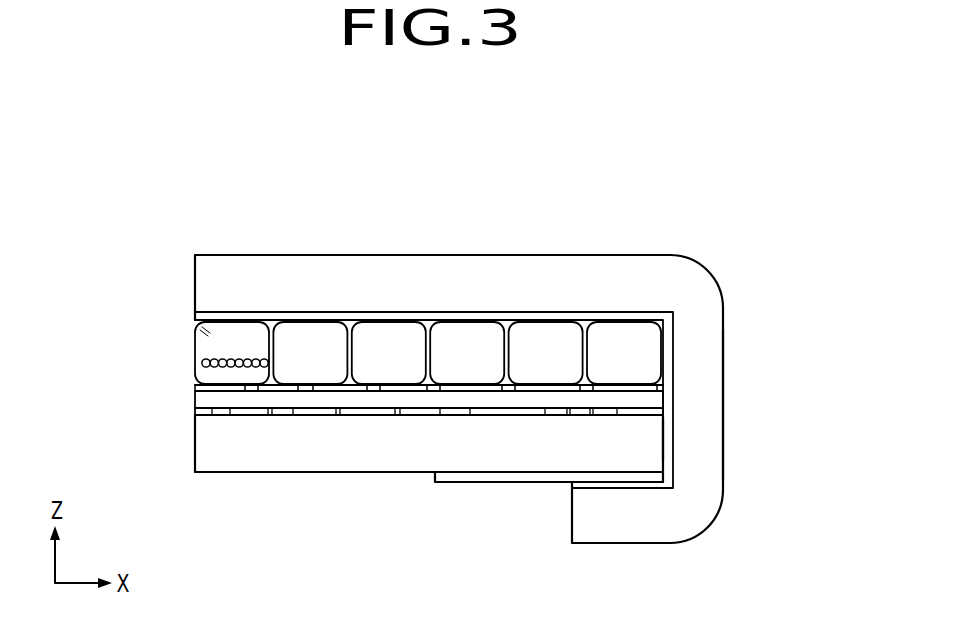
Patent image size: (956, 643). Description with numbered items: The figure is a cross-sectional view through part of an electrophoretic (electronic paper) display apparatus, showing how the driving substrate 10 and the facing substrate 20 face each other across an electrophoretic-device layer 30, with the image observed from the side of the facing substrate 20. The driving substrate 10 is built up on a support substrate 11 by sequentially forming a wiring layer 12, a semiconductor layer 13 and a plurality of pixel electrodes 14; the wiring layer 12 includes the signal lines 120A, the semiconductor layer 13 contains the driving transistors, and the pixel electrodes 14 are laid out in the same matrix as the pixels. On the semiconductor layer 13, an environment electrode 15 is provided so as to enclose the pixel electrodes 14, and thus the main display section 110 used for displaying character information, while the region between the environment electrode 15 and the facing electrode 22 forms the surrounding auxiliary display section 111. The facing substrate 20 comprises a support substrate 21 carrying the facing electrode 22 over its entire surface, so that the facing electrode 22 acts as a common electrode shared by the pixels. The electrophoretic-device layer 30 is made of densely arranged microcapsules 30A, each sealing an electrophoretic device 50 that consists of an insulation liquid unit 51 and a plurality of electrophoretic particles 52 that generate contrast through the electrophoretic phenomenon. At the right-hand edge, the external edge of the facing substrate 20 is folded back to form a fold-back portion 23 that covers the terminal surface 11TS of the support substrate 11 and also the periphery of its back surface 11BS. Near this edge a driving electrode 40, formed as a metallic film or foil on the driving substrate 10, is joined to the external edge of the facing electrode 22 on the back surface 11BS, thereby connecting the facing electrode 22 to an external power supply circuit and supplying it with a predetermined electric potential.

The driving substrate 10 is at (330, 544).
The support substrate 11 is at (362, 462).
The back surface 11BS is at (418, 474).
The terminal surface 11TS is at (663, 438).
The wiring layer 12 is at (189, 413).
The signal lines 120A is at (227, 416).
The semiconductor layer 13 is at (318, 399).
The pixel electrodes 14 is at (276, 389).
The environment electrode 15 is at (622, 386).
The facing substrate 20 is at (488, 247).
The support substrate 21 is at (333, 263).
The facing electrode 22 is at (376, 318).
The fold-back portion 23 is at (735, 422).
The electrophoretic-device layer 30 is at (181, 327).
The microcapsules 30A is at (204, 338).
The driving electrode 40 is at (530, 478).
The electrophoretic device 50 is at (283, 197).
The insulation liquid unit 51 is at (221, 340).
The electrophoretic particles 52 is at (247, 358).
The main display section 110 is at (427, 125).
The auxiliary display section 111 is at (433, 125).